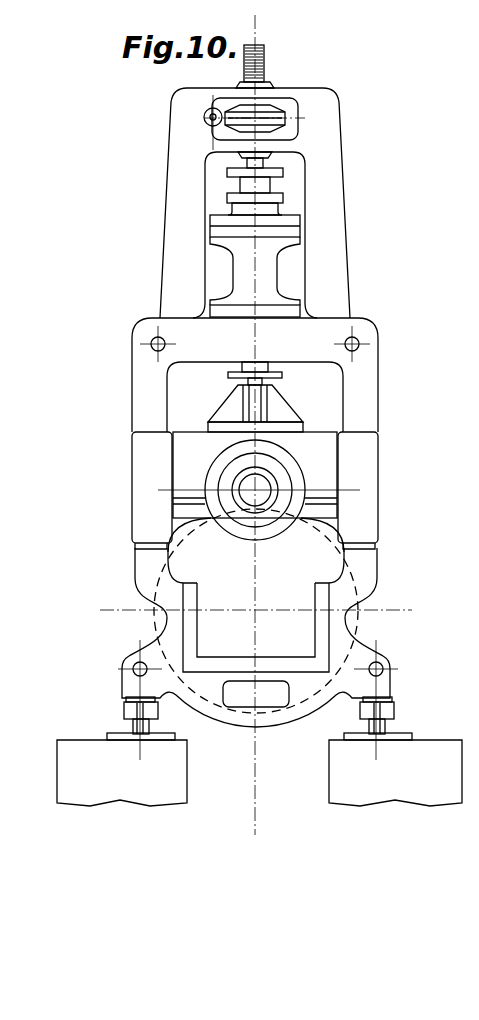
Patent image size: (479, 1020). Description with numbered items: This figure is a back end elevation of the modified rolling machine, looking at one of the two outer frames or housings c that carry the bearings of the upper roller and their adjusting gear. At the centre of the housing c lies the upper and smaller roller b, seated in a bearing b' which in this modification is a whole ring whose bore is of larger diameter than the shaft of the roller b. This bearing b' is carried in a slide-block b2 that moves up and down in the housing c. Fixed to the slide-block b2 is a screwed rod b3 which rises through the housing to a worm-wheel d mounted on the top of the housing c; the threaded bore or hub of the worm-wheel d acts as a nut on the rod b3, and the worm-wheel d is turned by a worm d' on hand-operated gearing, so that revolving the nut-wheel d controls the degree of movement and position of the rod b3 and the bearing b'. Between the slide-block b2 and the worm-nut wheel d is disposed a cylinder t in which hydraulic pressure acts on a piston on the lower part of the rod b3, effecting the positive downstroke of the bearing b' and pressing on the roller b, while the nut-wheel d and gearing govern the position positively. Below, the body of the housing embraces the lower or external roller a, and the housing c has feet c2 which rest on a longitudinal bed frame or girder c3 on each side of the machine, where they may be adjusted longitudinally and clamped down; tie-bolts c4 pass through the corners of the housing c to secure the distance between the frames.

The lower or external roller a is at (256, 618).
The upper and smaller roller b is at (259, 490).
The half-bearings b' is at (271, 490).
The slide-blocks b2 is at (326, 467).
The screwed rods b3 is at (264, 60).
The outer frames or housings c is at (170, 198).
The feet c2 is at (128, 704).
The longitudinal bed frame or girder c3 is at (390, 731).
The tie-bolts c4 is at (135, 665).
The worm-wheels d is at (274, 97).
The worms d' is at (181, 119).
The cylinders t is at (255, 234).